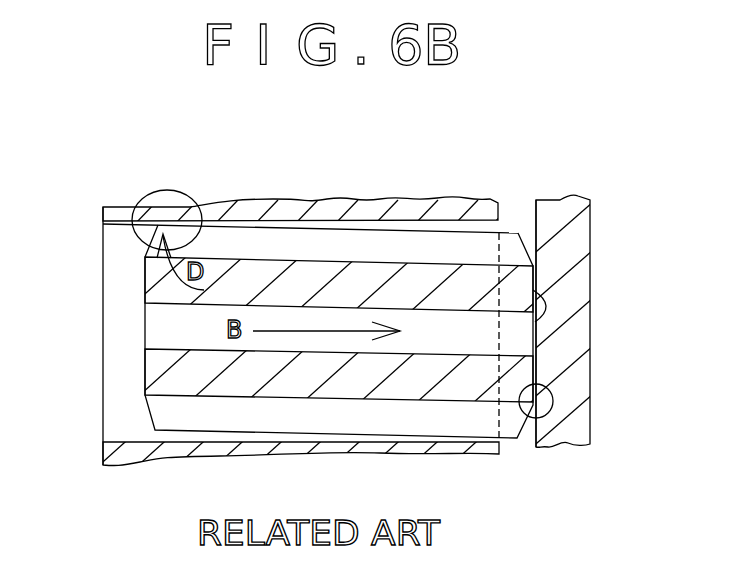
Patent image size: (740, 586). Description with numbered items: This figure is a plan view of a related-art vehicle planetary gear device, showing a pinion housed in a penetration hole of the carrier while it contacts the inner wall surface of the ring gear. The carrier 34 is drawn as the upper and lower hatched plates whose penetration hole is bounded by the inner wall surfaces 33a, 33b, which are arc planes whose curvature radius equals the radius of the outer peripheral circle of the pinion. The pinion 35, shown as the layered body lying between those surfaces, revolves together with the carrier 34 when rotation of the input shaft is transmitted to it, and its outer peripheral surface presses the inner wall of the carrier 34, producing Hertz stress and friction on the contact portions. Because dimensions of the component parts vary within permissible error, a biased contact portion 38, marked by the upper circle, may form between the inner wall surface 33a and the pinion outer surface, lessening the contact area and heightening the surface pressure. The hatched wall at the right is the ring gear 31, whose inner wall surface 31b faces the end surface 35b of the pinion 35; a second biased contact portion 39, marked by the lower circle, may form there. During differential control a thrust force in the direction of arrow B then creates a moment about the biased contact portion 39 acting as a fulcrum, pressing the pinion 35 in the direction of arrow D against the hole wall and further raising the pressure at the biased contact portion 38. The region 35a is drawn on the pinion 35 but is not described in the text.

The ring gear 31 is at (590, 307).
The inner wall surface of the ring gear 31b is at (534, 228).
The inner wall surface of the penetration hole 33a is at (126, 211).
The inner wall surface of the penetration hole 33b is at (123, 442).
The carrier 34 is at (291, 199).
The pinion 35 is at (144, 369).
The lower layer of laminated member 35a is at (177, 348).
The end surface of the pinion 35b is at (499, 330).
The biased contact portion 38 is at (175, 191).
The biased contact portion 39 is at (553, 412).